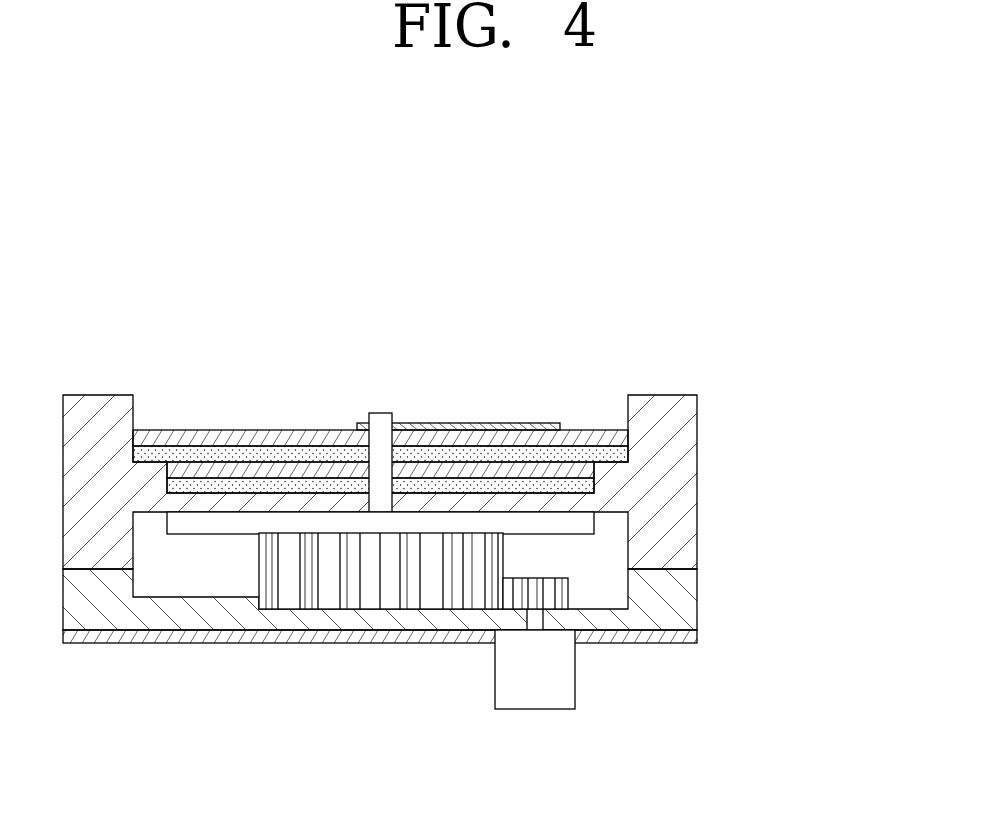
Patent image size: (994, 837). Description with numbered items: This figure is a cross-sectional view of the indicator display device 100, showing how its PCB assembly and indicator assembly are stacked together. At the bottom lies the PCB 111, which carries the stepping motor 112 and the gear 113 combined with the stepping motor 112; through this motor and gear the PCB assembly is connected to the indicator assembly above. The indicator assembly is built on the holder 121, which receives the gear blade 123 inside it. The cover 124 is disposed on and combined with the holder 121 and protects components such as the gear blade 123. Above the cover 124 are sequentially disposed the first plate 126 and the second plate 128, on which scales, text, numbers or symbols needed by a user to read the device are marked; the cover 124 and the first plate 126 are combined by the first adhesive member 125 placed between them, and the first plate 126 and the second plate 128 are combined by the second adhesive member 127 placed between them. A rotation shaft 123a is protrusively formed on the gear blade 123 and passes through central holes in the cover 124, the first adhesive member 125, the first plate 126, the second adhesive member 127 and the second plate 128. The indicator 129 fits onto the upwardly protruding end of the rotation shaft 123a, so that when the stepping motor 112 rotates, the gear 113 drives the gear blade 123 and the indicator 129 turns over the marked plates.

The indicator display device 100 is at (779, 366).
The PCB 111 is at (400, 638).
The stepping motor 112 is at (542, 695).
The gear 113 is at (546, 583).
The holder 121 is at (203, 617).
The gear blade 123 is at (328, 580).
The rotation shaft 123a is at (380, 412).
The cover 124 is at (665, 413).
The first adhesive member 125 is at (527, 480).
The first plate 126 is at (312, 470).
The second adhesive member 127 is at (254, 455).
The second plate 128 is at (207, 437).
The indicator 129 is at (477, 420).